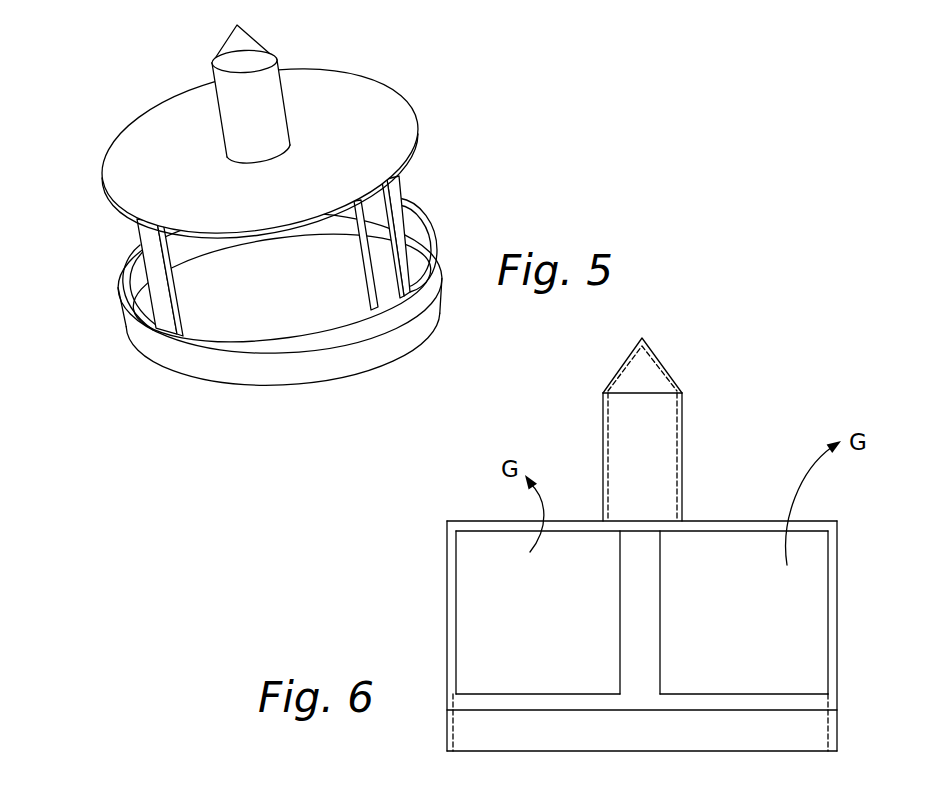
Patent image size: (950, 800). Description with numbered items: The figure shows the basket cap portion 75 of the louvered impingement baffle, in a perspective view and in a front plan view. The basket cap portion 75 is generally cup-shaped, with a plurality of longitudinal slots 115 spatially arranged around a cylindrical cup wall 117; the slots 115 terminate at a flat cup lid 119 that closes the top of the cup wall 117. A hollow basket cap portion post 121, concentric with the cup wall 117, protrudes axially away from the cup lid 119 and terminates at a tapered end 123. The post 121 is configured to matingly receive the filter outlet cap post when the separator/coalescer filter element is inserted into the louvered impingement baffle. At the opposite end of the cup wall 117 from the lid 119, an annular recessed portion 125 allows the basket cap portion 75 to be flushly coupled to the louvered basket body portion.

In FIG. 5, the basket cap portion 75 is at (112, 80).
In FIG. 5, the longitudinal slots 115 is at (423, 220).
In FIG. 6, the longitudinal slots 115 is at (803, 694).
In FIG. 6, the cylindrical cup wall 117 is at (688, 521).
In FIG. 5, the flat cup lid 119 is at (362, 74).
In FIG. 5, the basket cap portion post 121 is at (220, 138).
In FIG. 6, the basket cap portion post 121 is at (681, 453).
In FIG. 5, the tapered end 123 is at (259, 43).
In FIG. 6, the tapered end 123 is at (668, 371).
In FIG. 5, the annular recessed portion 125 is at (410, 336).
In FIG. 6, the annular recessed portion 125 is at (838, 732).